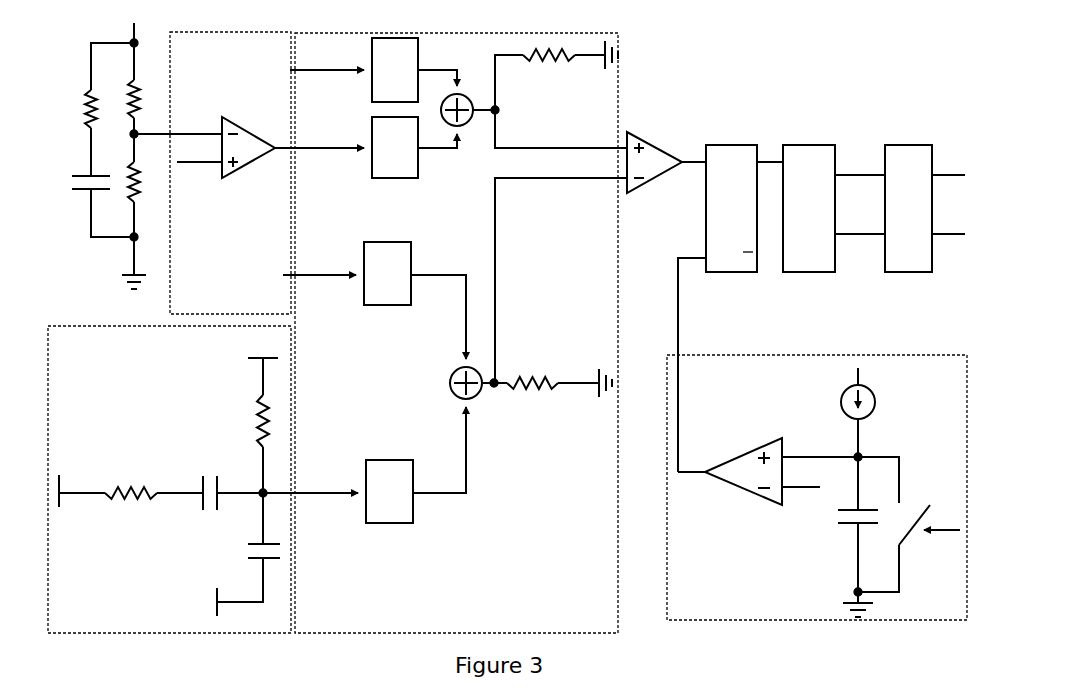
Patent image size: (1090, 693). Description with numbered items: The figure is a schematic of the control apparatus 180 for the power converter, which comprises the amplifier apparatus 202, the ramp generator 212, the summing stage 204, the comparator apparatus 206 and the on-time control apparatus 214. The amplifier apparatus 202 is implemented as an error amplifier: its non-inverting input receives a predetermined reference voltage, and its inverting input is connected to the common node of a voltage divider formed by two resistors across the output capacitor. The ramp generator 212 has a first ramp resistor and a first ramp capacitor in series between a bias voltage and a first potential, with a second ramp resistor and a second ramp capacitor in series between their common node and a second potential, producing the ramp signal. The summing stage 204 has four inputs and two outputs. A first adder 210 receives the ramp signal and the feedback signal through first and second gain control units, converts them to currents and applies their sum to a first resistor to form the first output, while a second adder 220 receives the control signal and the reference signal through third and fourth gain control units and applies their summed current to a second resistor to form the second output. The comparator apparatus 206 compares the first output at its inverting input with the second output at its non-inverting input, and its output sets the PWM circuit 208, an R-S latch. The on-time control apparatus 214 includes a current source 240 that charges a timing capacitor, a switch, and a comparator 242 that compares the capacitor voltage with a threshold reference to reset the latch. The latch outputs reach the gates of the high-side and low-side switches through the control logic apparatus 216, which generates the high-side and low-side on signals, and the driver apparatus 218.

The control apparatus 180 is at (907, 64).
The amplifier apparatus 202 is at (243, 306).
The summing stage 204 is at (445, 333).
The comparator apparatus 206 is at (658, 138).
The PWM circuit 208 is at (748, 216).
The first adder 210 is at (453, 394).
The ramp generator 212 is at (88, 623).
The on-time control apparatus 214 is at (817, 487).
The control logic apparatus 216 is at (800, 272).
The driver apparatus 218 is at (893, 272).
The second adder 220 is at (466, 95).
The current source 240 is at (841, 399).
The comparator 242 is at (738, 455).